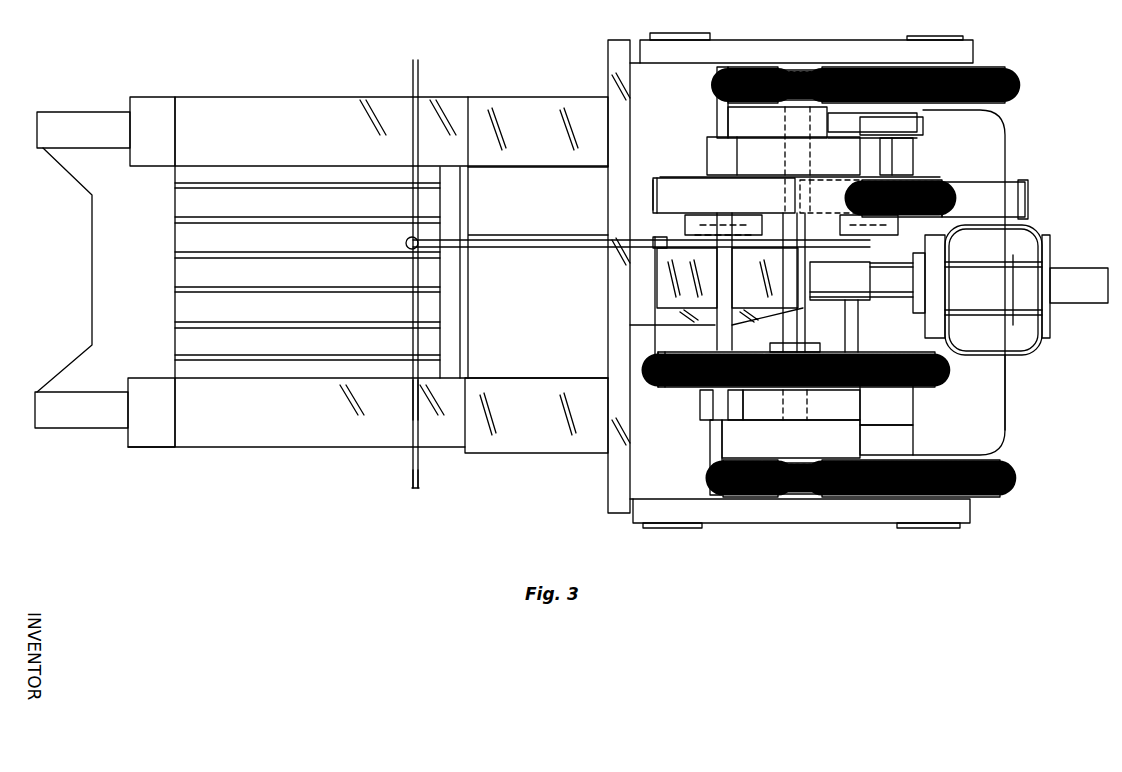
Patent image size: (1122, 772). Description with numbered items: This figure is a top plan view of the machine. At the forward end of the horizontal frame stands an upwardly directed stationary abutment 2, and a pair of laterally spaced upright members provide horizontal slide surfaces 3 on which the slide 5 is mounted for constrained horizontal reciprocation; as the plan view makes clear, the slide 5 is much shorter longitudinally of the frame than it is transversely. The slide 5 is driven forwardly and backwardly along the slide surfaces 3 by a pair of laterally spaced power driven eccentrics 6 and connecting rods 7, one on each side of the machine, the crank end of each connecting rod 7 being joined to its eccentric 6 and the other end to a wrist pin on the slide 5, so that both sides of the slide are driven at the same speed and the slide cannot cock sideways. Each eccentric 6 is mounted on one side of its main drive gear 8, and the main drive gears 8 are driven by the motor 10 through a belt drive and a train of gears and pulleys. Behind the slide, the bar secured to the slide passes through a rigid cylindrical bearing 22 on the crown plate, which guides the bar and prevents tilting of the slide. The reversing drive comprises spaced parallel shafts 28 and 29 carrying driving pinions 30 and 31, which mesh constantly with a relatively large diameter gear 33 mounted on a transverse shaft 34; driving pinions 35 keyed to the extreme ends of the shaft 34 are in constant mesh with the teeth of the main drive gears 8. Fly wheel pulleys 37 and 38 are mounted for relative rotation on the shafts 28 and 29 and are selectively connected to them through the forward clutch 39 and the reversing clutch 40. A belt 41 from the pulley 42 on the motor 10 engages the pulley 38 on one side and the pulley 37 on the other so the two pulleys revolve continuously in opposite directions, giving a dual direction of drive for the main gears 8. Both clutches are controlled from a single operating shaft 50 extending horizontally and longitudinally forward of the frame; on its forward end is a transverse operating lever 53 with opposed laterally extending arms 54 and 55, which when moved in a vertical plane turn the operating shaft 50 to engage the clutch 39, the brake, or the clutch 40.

The stationary abutment 2 is at (175, 140).
The slide surfaces 3 is at (507, 465).
The slide 5 is at (608, 184).
The eccentrics 6 is at (937, 36).
The connecting rods 7 is at (822, 40).
The main drive gear 8 is at (1005, 82).
The motor 10 is at (981, 327).
The cylindrical bearing 22 is at (1068, 303).
The shaft 28 is at (714, 281).
The shaft 29 is at (860, 274).
The driving pinion 30 is at (752, 387).
The driving pinion 31 is at (853, 350).
The gear 33 is at (690, 386).
The shaft 34 is at (785, 325).
The driving pinions 35 is at (786, 70).
The fly wheel pulley 37 is at (657, 178).
The fly wheel pulley 38 is at (932, 182).
The forward clutch 39 is at (700, 213).
The reversing clutch 40 is at (855, 213).
The belt 41 is at (840, 281).
The pulley 42 is at (1020, 182).
The operating shaft 50 is at (530, 247).
The operating lever 53 is at (413, 470).
The arm 54 is at (418, 407).
The arm 55 is at (413, 80).